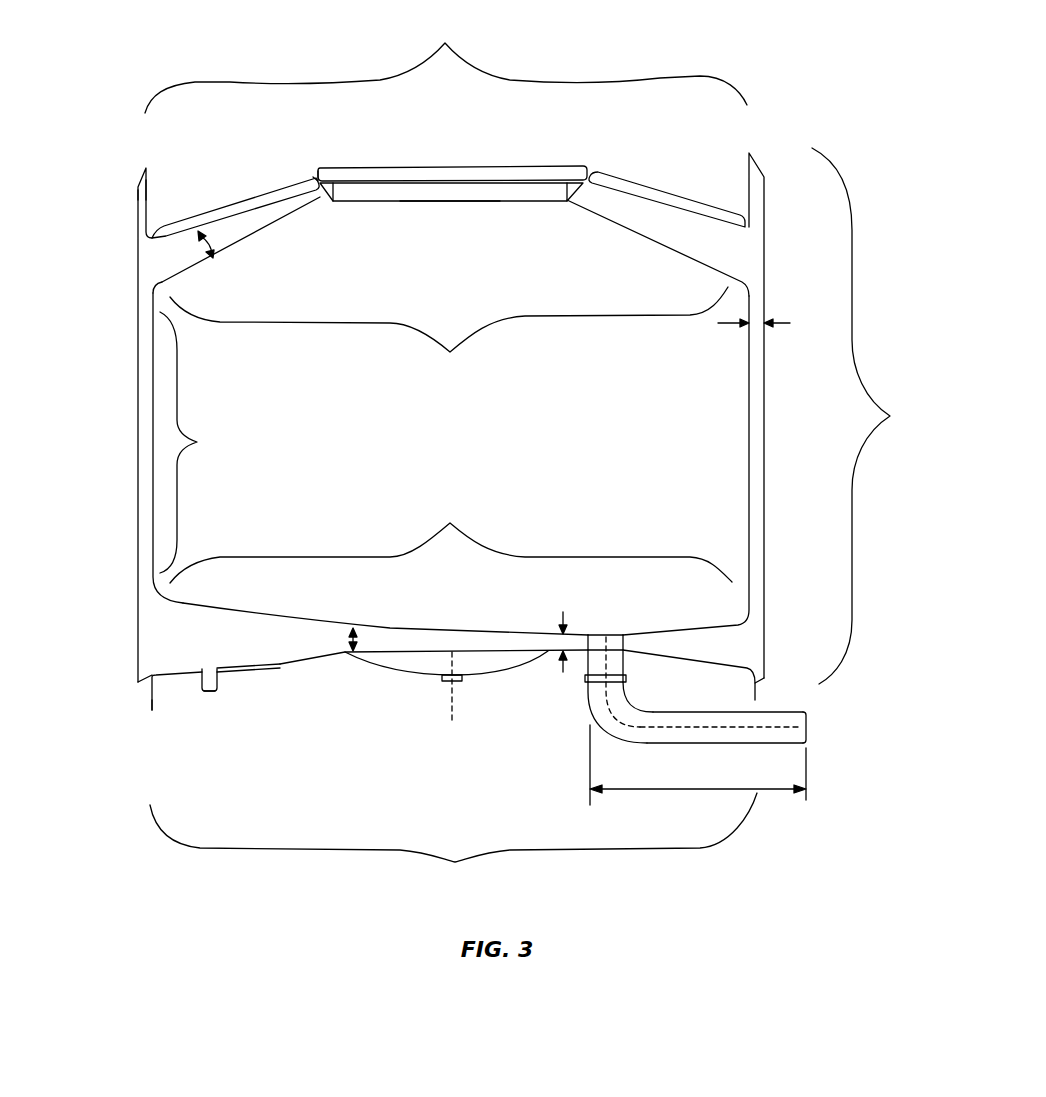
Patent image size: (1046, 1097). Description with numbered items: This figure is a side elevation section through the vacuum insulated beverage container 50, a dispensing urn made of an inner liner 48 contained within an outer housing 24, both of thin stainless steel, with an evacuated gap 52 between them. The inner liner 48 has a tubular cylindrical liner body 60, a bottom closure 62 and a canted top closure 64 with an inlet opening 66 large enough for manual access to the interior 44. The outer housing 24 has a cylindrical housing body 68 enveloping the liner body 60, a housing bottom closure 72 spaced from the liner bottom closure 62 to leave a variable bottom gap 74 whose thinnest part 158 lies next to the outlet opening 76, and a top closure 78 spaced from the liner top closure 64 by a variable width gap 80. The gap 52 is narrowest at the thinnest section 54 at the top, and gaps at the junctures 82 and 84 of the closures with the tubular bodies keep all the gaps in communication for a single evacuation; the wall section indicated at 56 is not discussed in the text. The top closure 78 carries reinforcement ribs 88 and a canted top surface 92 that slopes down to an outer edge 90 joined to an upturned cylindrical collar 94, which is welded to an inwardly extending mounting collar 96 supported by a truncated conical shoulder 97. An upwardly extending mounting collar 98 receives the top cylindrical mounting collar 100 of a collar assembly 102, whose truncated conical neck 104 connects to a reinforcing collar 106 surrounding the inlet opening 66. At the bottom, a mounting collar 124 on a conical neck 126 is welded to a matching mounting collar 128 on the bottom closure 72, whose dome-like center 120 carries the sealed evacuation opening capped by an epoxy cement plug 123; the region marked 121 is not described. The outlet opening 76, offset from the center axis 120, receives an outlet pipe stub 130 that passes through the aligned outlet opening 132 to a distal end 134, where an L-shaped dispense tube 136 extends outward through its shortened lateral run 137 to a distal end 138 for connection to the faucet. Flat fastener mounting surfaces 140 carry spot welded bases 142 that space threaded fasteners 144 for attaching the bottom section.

The outer housing 24 is at (138, 375).
The interior 44 is at (437, 432).
The inner liner 48 is at (153, 428).
The vacuum insulated beverage container 50 is at (558, 162).
The evacuated gap 52 is at (153, 622).
The thinnest section 54 is at (316, 197).
The wall thickness 56 is at (782, 323).
The liner body 60 is at (194, 442).
The bottom closure 62 is at (451, 538).
The top closure 64 is at (449, 334).
The inlet opening 66 is at (565, 190).
The housing body 68 is at (867, 416).
The housing bottom closure 72 is at (453, 849).
The variable bottom gap 74 is at (352, 628).
The outlet opening 76 is at (623, 634).
The top closure 78 is at (446, 64).
The variable width gap 80 is at (200, 240).
The juncture 82 is at (140, 292).
The juncture 84 is at (760, 638).
The reinforcement ribs 88 is at (626, 178).
The outer edge 90 is at (742, 202).
The canted top surface 92 is at (188, 222).
The upturned cylindrical collar 94 is at (148, 188).
The mounting collar 96 is at (142, 164).
The truncated conical shoulder 97 is at (136, 190).
The mounting collar 98 is at (313, 176).
The top cylindrical mounting collar 100 is at (322, 171).
The collar assembly 102 is at (406, 169).
The truncated conical neck 104 is at (362, 190).
The reinforcing collar 106 is at (443, 200).
The center axis 120 is at (456, 718).
The sump wall 121 is at (390, 668).
The epoxy cement plug 123 is at (452, 682).
The mounting collar 124 is at (150, 708).
The conical neck 126 is at (138, 684).
The mounting collar 128 is at (153, 693).
The outlet pipe stub 130 is at (625, 642).
The outlet opening 132 is at (588, 684).
The distal end 134 is at (614, 652).
The L-shaped dispense tube 136 is at (700, 739).
The lateral run 137 is at (762, 790).
The distal end 138 is at (807, 720).
The fastener mounting surfaces 140 is at (243, 671).
The bases 142 is at (220, 682).
The threaded fasteners 144 is at (222, 690).
The thinnest part 158 is at (560, 665).